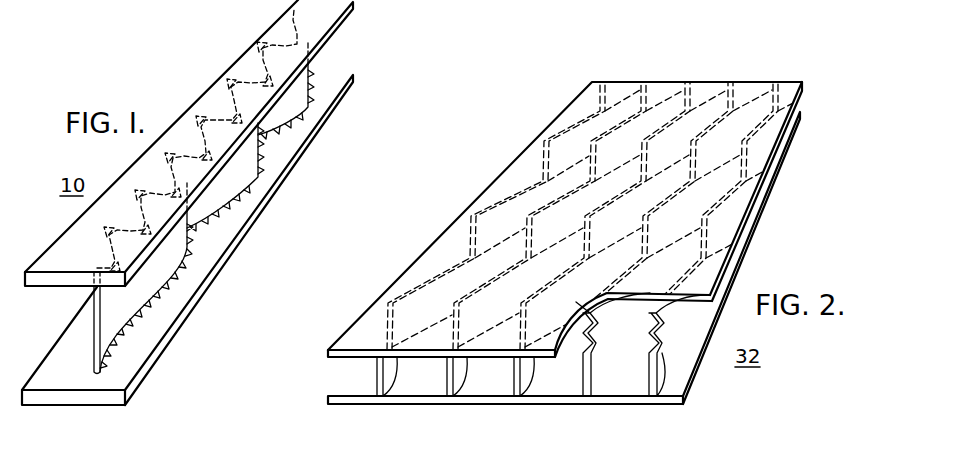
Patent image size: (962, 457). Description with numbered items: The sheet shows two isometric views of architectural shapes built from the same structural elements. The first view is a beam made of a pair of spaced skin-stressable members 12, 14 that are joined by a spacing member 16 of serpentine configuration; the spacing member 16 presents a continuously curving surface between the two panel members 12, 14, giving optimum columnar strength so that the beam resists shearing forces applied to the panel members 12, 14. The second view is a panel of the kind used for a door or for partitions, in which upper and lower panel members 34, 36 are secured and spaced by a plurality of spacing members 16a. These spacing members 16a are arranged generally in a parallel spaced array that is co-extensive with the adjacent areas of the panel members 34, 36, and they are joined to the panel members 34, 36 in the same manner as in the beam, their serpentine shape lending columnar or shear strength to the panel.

In FIG. 1, the skin-stressable member 12 is at (345, 22).
In FIG. 1, the skin-stressable member 14 is at (302, 148).
In FIG. 1, the spacing member 16 is at (226, 188).
In FIG. 2, the upper panel member 34 is at (757, 197).
In FIG. 2, the lower panel member 36 is at (752, 242).
In FIG. 2, the spacing members 16a is at (460, 373).